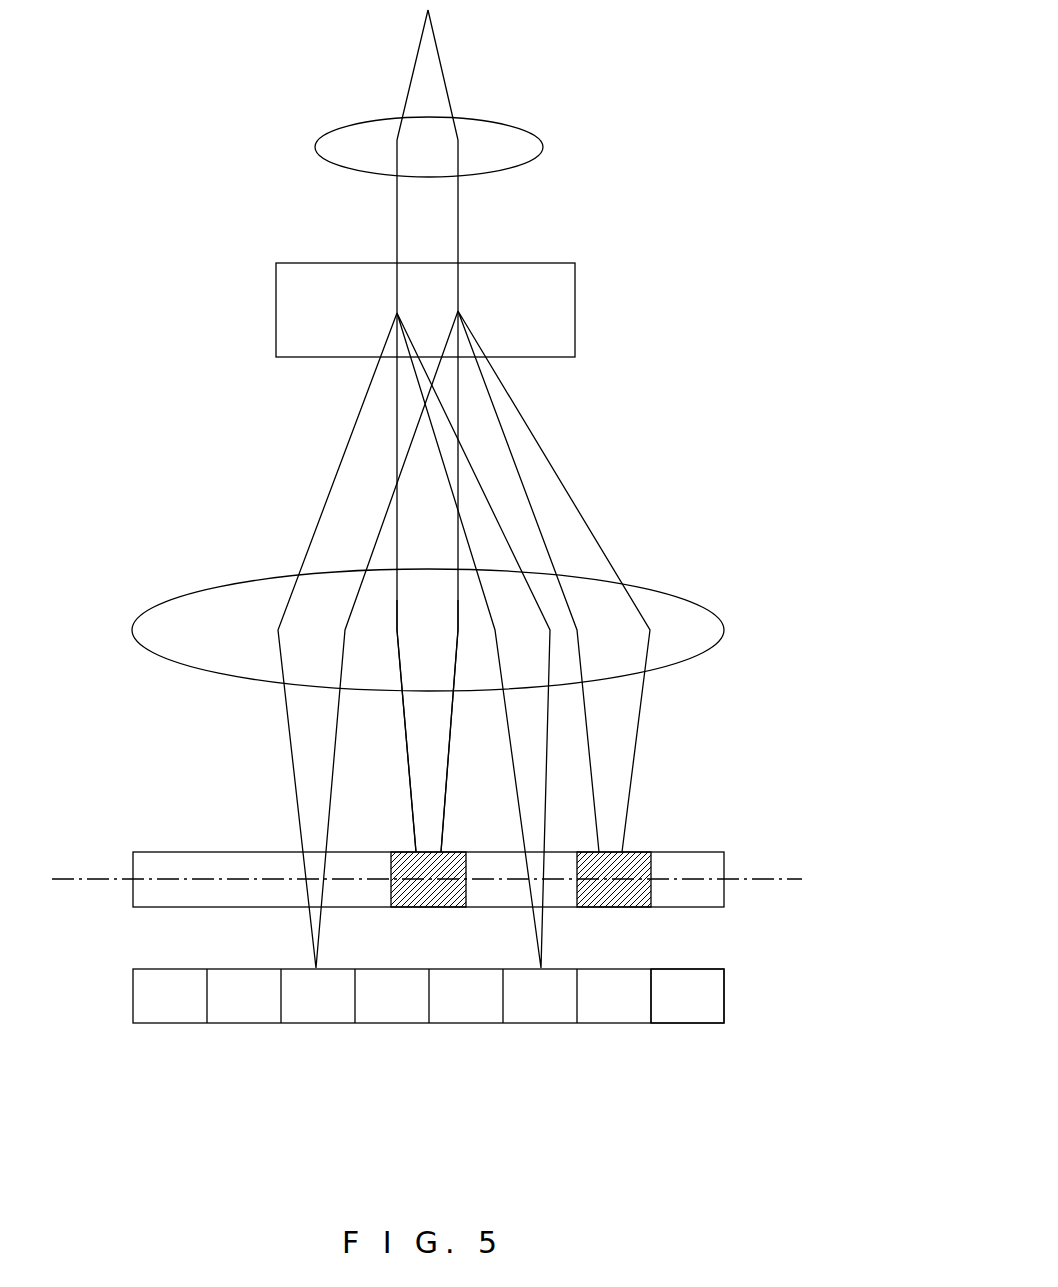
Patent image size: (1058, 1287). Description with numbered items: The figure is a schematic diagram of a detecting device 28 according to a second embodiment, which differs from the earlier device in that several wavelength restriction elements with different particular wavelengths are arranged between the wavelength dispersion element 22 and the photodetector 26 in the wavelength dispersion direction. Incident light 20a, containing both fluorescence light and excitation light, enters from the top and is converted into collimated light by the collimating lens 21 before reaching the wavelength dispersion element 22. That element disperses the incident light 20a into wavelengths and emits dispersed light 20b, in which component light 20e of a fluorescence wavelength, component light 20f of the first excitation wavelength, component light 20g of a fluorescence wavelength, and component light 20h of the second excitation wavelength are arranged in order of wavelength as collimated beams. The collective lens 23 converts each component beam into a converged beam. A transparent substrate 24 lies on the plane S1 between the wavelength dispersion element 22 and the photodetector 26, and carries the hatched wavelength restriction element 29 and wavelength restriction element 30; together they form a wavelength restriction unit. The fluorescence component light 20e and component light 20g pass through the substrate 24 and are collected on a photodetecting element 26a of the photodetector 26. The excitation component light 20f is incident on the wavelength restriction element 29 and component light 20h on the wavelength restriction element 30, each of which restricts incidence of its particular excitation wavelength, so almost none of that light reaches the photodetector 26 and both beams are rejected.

The detecting device 28 is at (738, 38).
The incident light 20a is at (425, 65).
The collimating lens 21 is at (332, 147).
The wavelength dispersion element 22 is at (292, 317).
The dispersed light 20b is at (540, 554).
The component light 20e is at (380, 393).
The component light 20f is at (422, 448).
The component light 20g is at (483, 489).
The component light 20h is at (717, 398).
The collective lens 23 is at (148, 633).
The substrate 24 is at (138, 868).
The plane S1 is at (72, 878).
The wavelength restriction element 29 is at (403, 860).
The wavelength restriction element 30 is at (592, 860).
The photodetector 26 is at (117, 1000).
The photodetecting element 26a is at (710, 989).